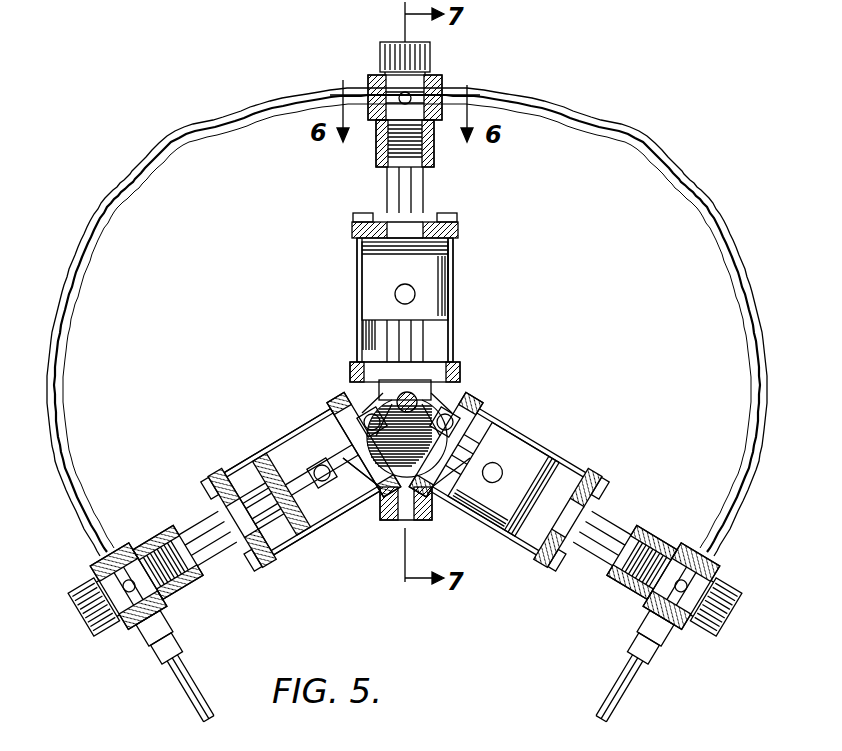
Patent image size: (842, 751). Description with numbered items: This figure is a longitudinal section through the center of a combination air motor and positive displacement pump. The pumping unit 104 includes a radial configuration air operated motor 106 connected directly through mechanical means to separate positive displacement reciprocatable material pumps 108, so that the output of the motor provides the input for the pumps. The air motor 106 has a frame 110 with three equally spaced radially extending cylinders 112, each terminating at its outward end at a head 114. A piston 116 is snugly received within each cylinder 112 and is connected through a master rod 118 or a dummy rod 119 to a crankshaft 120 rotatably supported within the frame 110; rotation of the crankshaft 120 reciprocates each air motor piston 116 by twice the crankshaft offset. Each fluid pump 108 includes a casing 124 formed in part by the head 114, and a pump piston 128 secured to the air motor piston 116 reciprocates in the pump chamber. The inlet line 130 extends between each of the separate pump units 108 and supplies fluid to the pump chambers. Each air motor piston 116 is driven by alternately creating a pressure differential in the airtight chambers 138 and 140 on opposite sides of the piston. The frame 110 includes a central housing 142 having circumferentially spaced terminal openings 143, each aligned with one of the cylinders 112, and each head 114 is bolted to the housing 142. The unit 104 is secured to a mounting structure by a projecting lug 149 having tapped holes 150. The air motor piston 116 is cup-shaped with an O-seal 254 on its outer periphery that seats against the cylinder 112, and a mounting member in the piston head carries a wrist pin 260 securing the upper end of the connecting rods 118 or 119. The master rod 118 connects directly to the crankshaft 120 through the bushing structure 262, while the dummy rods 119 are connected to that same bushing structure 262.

The pumping unit 104 is at (298, 325).
The air operated motor 106 is at (288, 446).
The material pump 108 is at (442, 78).
The frame 110 is at (462, 280).
The cylinder 112 is at (452, 350).
The head 114 is at (460, 234).
The air motor piston 116 is at (363, 292).
The master rod 118 is at (372, 340).
The dummy rod 119 is at (470, 418).
The crankshaft 120 is at (380, 388).
The casing 124 is at (378, 148).
The pump piston 128 is at (250, 560).
The inlet line 130 is at (72, 300).
The airtight chamber 138 is at (428, 233).
The airtight chamber 140 is at (447, 318).
The central housing 142 is at (355, 375).
The terminal opening 143 is at (355, 420).
The projecting lug 149 is at (380, 510).
The tapped holes 150 is at (426, 515).
The O-seal 254 is at (447, 254).
The wrist pin 260 is at (360, 522).
The bushing structure 262 is at (448, 395).